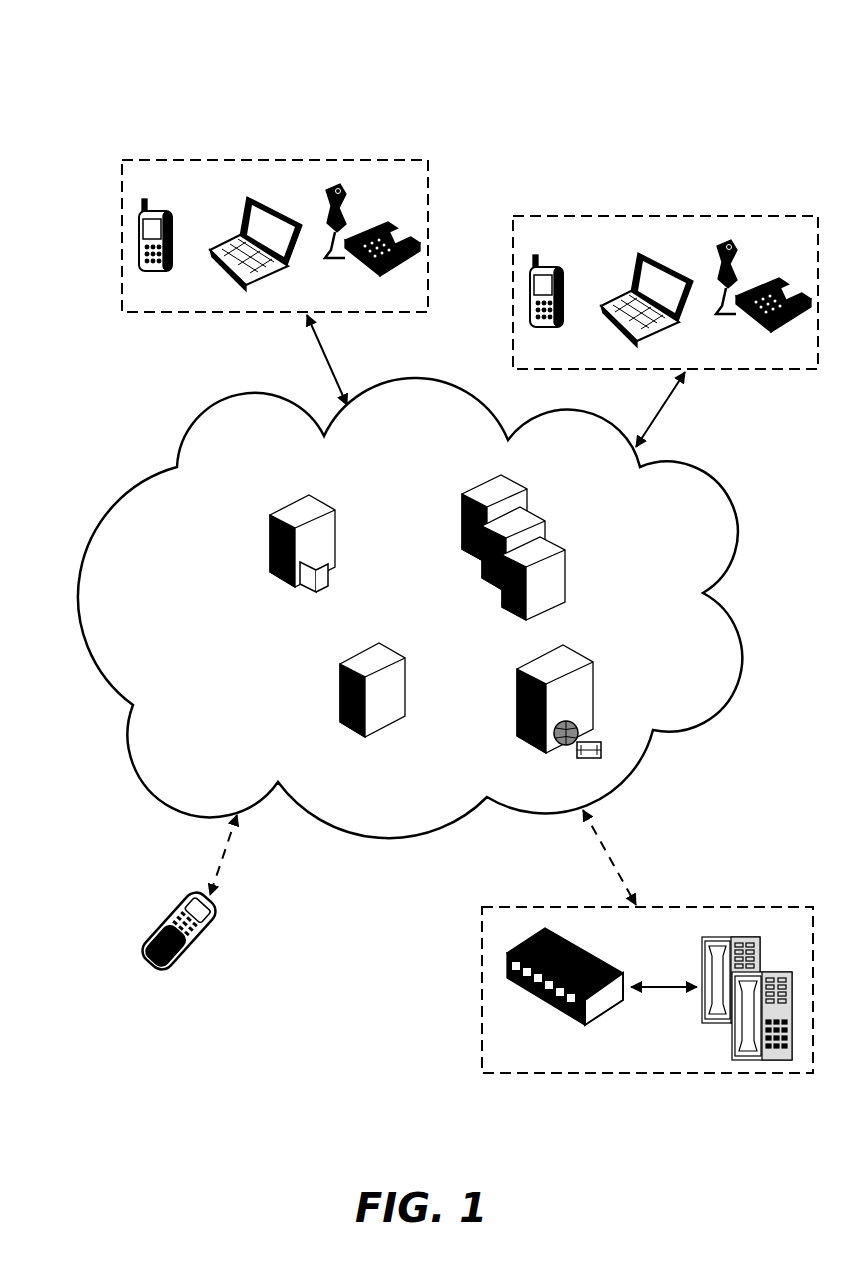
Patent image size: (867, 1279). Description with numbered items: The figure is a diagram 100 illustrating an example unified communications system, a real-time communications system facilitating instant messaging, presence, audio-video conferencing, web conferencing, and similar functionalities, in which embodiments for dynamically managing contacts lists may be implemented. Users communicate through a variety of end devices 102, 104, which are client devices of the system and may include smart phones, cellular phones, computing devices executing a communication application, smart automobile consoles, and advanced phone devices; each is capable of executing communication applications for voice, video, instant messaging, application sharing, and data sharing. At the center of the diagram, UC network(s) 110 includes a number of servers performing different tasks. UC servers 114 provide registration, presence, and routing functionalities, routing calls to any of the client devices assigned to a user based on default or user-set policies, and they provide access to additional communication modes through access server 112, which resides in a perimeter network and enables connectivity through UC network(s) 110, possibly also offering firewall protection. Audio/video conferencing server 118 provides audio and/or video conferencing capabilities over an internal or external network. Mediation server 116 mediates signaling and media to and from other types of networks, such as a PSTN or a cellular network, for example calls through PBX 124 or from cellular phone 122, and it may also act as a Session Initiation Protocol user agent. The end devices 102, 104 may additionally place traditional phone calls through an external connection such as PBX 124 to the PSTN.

The diagram 100 is at (686, 62).
The end device 102 is at (175, 154).
The end device 104 is at (566, 212).
The UC network(s) 110 is at (205, 403).
The access server 112 is at (300, 490).
The UC servers 114 is at (487, 478).
The mediation server 116 is at (352, 652).
The audio/video conferencing server 118 is at (542, 655).
The cellular phone 122 is at (166, 912).
The PBX 124 is at (505, 893).